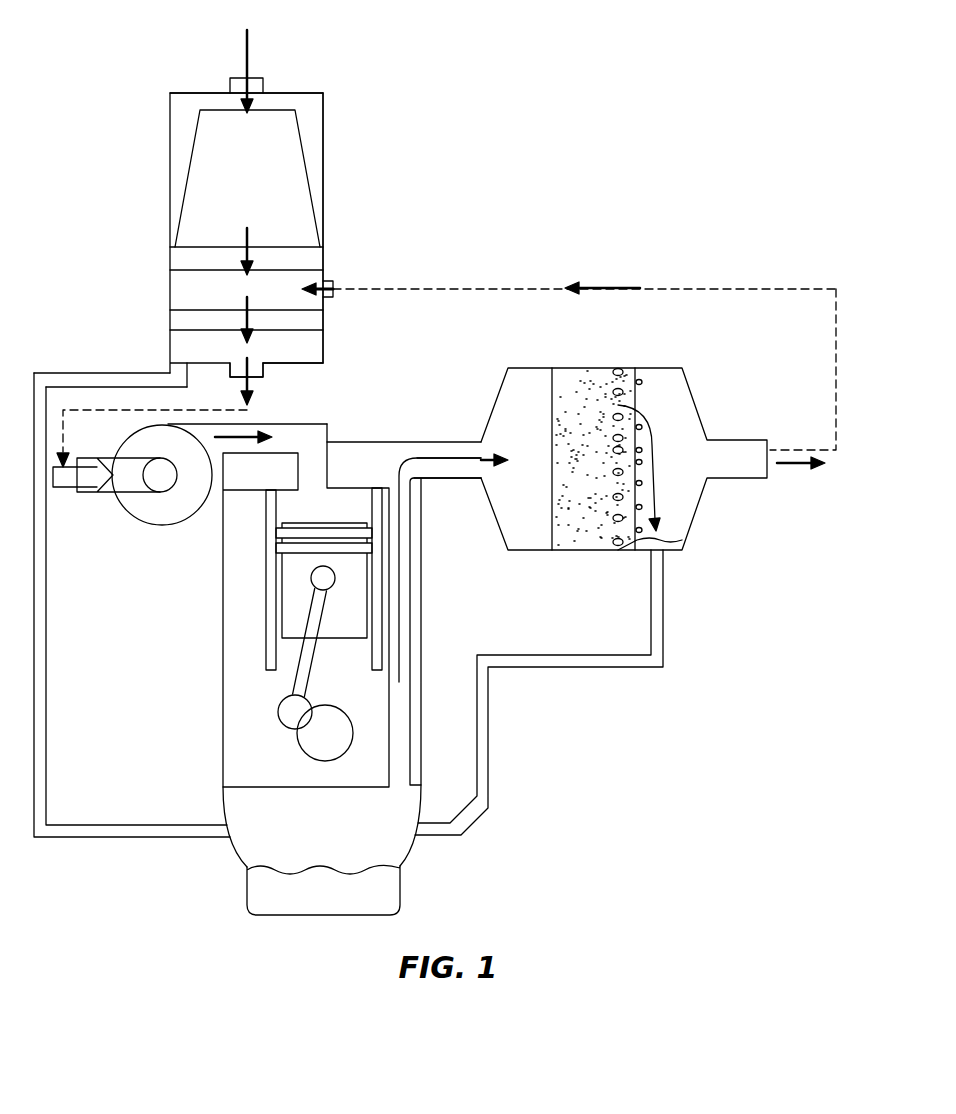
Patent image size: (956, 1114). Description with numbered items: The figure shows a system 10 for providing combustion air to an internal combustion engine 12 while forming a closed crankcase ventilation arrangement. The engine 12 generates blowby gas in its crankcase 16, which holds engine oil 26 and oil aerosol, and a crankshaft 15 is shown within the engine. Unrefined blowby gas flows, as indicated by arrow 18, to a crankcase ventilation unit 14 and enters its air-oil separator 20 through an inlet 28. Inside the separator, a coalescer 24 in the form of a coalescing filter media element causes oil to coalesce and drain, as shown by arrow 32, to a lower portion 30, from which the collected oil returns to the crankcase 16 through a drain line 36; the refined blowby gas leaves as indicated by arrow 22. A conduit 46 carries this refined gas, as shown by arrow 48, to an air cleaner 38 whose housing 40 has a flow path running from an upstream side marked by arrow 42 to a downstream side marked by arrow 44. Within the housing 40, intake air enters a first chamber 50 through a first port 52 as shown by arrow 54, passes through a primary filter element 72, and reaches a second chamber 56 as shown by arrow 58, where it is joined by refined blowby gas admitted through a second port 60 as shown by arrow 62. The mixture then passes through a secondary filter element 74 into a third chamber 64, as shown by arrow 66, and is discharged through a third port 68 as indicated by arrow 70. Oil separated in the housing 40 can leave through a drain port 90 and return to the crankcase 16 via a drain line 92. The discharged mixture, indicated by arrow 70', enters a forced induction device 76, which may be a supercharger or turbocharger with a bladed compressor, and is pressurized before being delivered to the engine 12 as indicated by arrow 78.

The system 10 is at (575, 154).
The internal combustion engine 12 is at (223, 612).
The crankcase ventilation unit 14 is at (711, 529).
The crankshaft 15 is at (310, 654).
The crankcase 16 is at (273, 833).
The arrow 18 is at (445, 440).
The air-oil separator 20 is at (658, 367).
The arrow 22 is at (797, 467).
The coalescer 24 is at (587, 388).
The engine oil 26 is at (385, 883).
The inlet 28 is at (448, 480).
The lower portion 30 is at (640, 545).
The arrow 32 is at (653, 440).
The drain line 36 is at (557, 667).
The air cleaner 38 is at (352, 65).
The housing 40 is at (170, 197).
The arrow 42 is at (149, 89).
The arrow 44 is at (147, 361).
The conduit 46 is at (507, 281).
The arrow 48 is at (588, 284).
The first chamber 50 is at (312, 121).
The first port 52 is at (266, 88).
The arrow 54 is at (243, 58).
The second chamber 56 is at (200, 288).
The arrow 58 is at (285, 238).
The second port 60 is at (324, 280).
The arrow 62 is at (340, 288).
The third chamber 64 is at (305, 347).
The arrow 66 is at (243, 318).
The third port 68 is at (263, 370).
The arrow 70 is at (222, 381).
The arrow 70' is at (152, 438).
The primary filter element 72 is at (273, 163).
The secondary filter element 74 is at (305, 318).
The forced induction device 76 is at (168, 525).
The arrow 78 is at (240, 437).
The drain port 90 is at (182, 360).
The drain line 92 is at (47, 640).